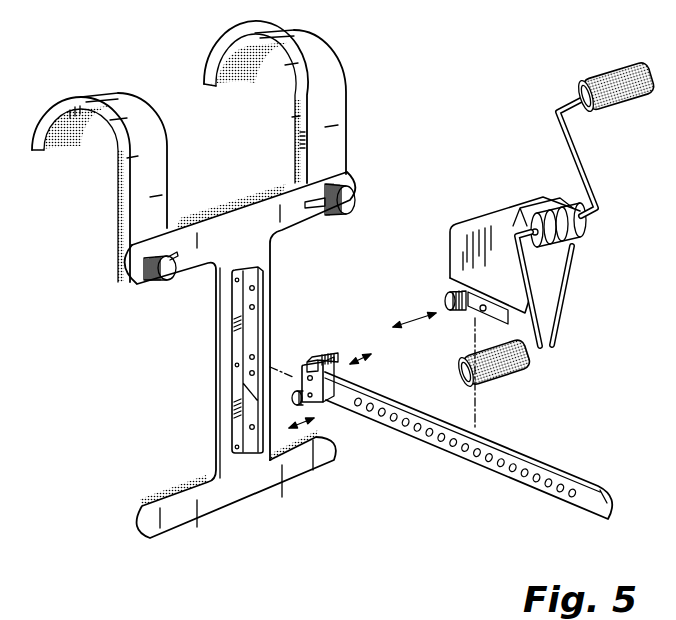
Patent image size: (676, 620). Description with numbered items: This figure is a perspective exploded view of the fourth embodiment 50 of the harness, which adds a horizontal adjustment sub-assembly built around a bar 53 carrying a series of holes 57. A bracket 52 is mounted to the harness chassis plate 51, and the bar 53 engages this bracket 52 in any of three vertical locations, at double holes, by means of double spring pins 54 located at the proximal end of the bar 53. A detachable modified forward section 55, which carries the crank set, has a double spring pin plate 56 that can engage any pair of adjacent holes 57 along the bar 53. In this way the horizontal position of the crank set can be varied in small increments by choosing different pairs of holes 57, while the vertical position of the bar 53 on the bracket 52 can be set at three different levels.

The fourth embodiment 50 is at (452, 98).
The harness chassis plate 51 is at (248, 508).
The bracket 52 is at (248, 337).
The bar 53 is at (556, 462).
The double spring pins 54 is at (312, 346).
The detachable modified forward section 55 is at (496, 238).
The double spring pin plate 56 is at (454, 319).
The holes 57 is at (428, 435).